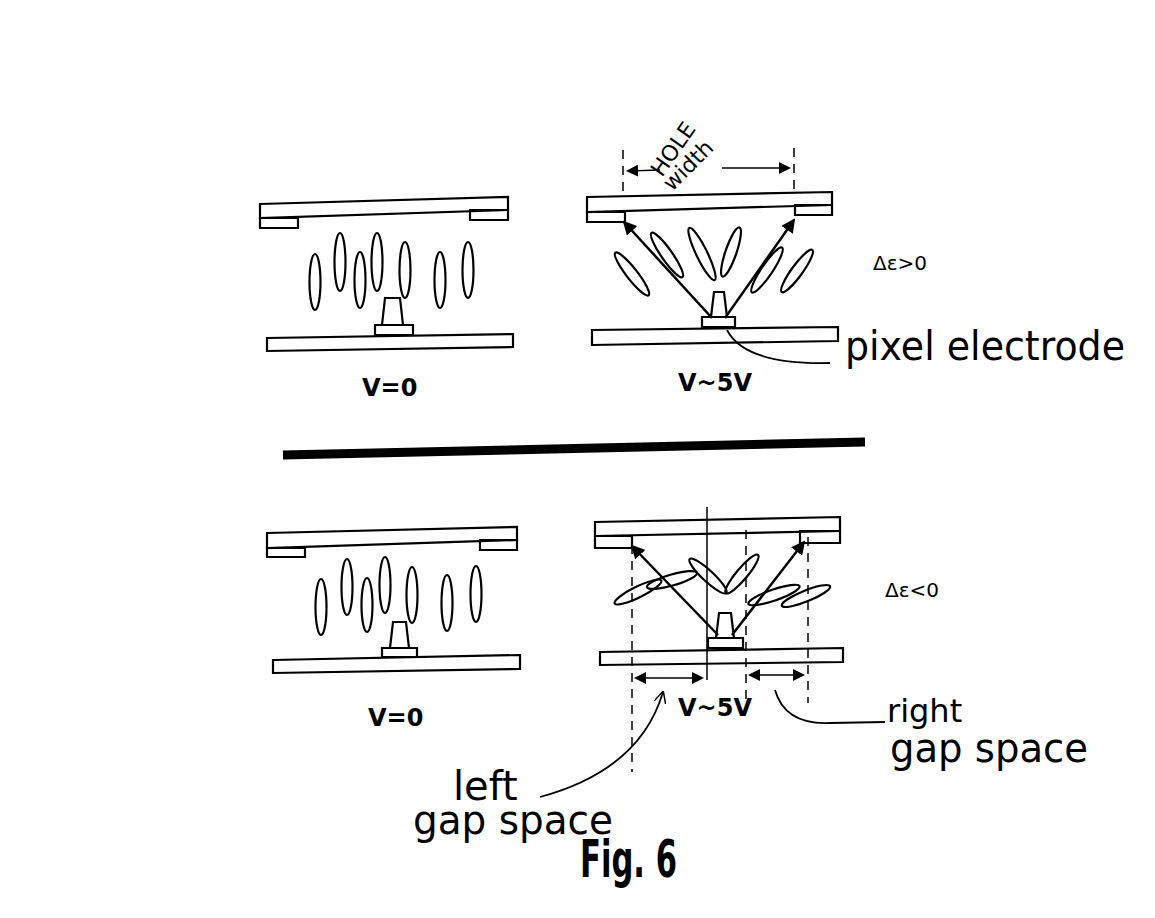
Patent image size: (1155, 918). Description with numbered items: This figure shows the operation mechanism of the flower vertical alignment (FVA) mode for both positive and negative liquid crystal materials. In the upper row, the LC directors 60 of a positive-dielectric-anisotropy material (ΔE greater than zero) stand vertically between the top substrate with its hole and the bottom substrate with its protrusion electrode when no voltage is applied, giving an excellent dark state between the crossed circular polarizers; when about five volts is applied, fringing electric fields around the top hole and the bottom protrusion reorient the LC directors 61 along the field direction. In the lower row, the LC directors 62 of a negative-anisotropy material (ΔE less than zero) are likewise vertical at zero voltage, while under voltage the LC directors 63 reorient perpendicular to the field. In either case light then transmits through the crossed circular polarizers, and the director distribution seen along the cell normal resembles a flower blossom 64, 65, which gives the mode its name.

The LC directors 60 is at (285, 285).
The LC directors 61 is at (813, 275).
The LC directors 62 is at (297, 613).
The LC directors 63 is at (833, 603).
The flower blossom 64 is at (776, 152).
The flower blossom 65 is at (729, 560).